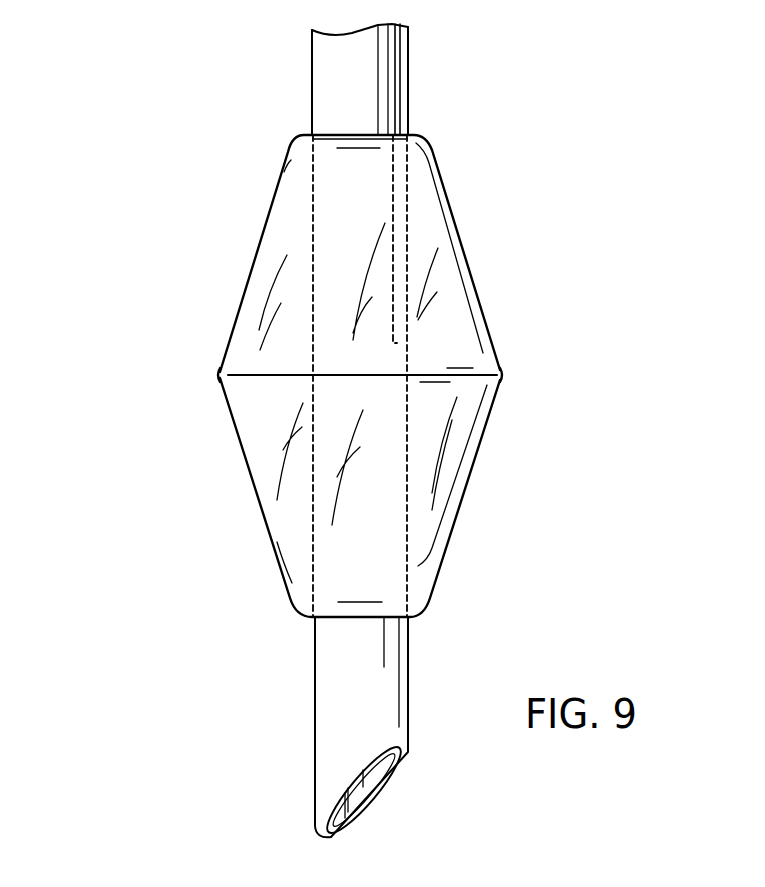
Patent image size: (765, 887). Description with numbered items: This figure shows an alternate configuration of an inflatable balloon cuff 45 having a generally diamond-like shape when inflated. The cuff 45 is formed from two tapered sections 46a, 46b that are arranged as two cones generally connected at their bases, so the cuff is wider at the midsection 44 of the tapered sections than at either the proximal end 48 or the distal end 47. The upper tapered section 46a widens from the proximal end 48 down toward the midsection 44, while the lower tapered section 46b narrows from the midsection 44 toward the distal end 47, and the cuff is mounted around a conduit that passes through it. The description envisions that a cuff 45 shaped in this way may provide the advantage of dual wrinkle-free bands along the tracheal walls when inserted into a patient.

The cuff 45 is at (157, 80).
The proximal end 48 is at (416, 133).
The midsection 44 is at (500, 376).
The tapered section 46a is at (237, 313).
The tapered section 46b is at (255, 490).
The distal end 47 is at (417, 618).